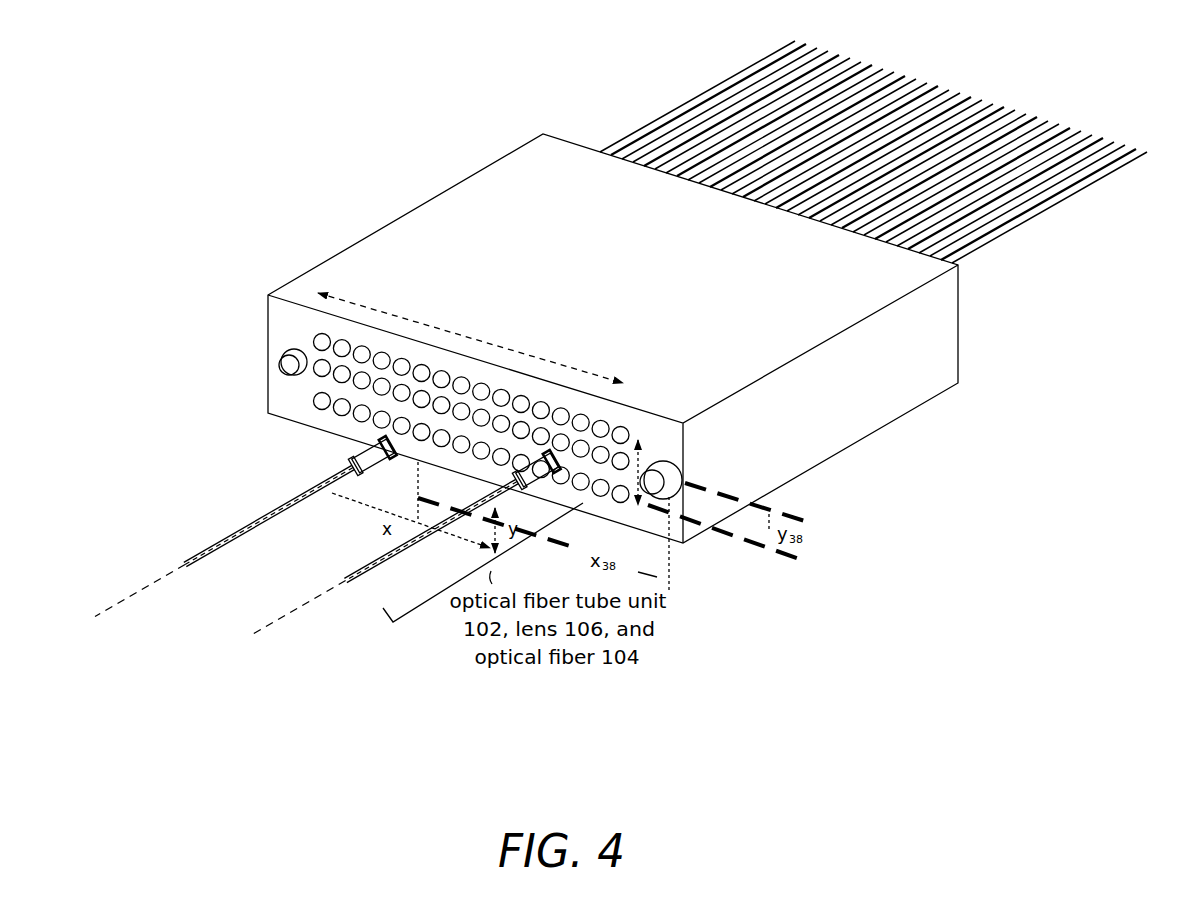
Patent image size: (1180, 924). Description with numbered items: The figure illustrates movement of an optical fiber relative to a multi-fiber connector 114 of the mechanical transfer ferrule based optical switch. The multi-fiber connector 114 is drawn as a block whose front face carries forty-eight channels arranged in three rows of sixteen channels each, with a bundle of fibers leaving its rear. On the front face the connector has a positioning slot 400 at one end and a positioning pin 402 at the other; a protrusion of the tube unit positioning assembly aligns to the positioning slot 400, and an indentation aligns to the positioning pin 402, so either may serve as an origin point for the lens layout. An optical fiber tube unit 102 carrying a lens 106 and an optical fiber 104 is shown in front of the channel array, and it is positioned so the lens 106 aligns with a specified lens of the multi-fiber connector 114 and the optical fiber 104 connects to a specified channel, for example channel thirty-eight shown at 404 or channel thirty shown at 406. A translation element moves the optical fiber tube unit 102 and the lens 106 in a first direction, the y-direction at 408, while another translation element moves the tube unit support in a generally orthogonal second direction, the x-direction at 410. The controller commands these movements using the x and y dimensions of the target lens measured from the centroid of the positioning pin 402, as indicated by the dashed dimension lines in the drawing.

The multi-fiber connector 114 is at (383, 185).
The positioning slot 400 is at (268, 343).
The positioning pin 402 is at (680, 498).
The channel 38 404 is at (418, 430).
The channel 30 406 is at (587, 441).
The y-direction 408 is at (647, 453).
The x-direction 410 is at (473, 332).
The optical fiber tube unit 102 is at (348, 461).
The optical fiber 104 is at (208, 562).
The lens 106 is at (378, 438).